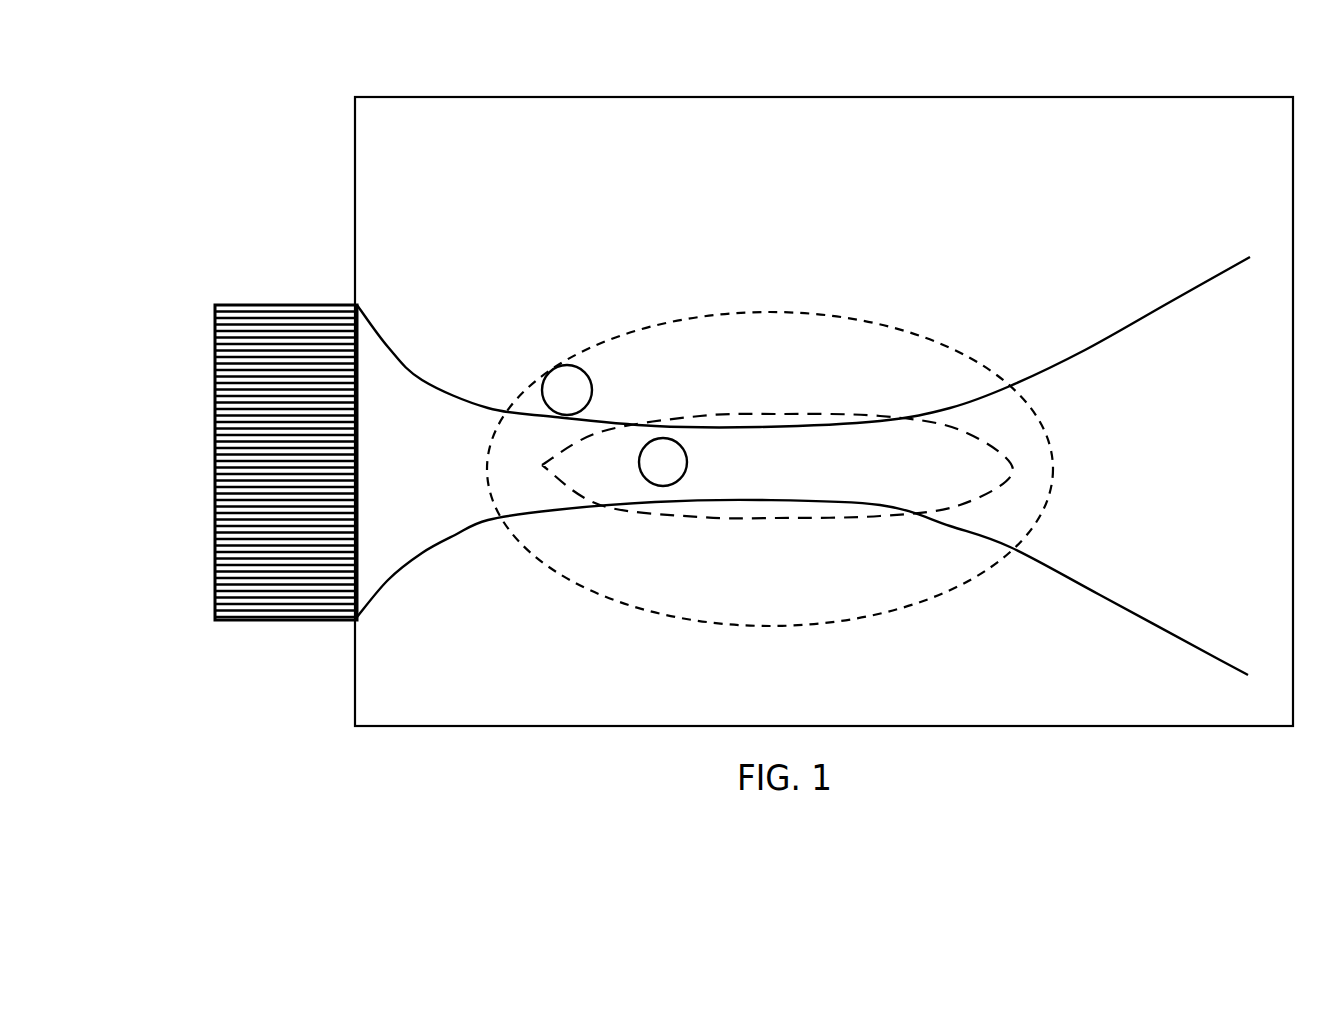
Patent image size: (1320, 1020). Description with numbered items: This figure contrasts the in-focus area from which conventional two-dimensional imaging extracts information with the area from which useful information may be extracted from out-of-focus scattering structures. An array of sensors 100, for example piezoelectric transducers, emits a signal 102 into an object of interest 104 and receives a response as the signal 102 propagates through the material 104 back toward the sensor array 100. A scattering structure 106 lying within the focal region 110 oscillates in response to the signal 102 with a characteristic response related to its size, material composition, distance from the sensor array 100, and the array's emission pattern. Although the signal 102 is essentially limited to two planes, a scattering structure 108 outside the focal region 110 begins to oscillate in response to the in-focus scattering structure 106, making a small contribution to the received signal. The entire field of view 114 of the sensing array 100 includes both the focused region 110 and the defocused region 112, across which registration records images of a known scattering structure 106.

The sensor array 100 is at (333, 313).
The signal 102 is at (1085, 350).
The object of interest 104 is at (354, 185).
The scattering structure 106 is at (663, 438).
The out-of-focus scattering structure 108 is at (542, 388).
The focal region 110 is at (1013, 470).
The defocused region 112 is at (928, 600).
The field of view 114 is at (790, 532).